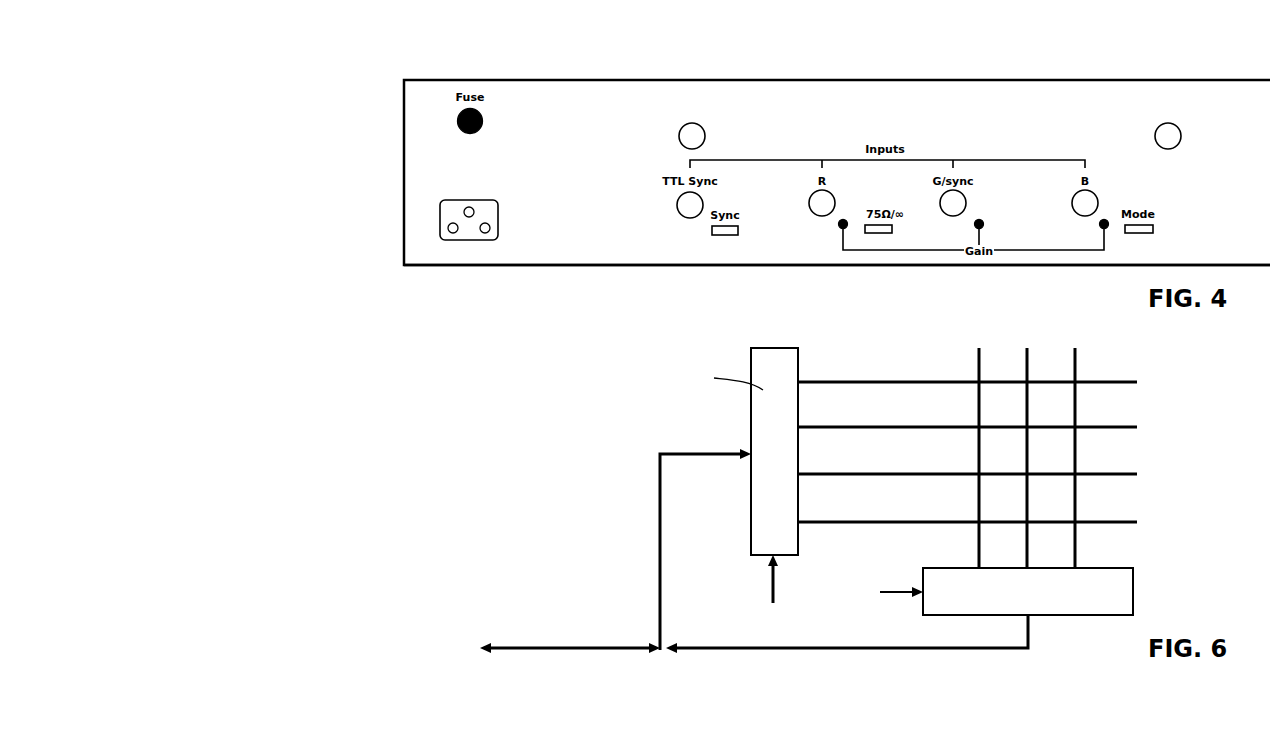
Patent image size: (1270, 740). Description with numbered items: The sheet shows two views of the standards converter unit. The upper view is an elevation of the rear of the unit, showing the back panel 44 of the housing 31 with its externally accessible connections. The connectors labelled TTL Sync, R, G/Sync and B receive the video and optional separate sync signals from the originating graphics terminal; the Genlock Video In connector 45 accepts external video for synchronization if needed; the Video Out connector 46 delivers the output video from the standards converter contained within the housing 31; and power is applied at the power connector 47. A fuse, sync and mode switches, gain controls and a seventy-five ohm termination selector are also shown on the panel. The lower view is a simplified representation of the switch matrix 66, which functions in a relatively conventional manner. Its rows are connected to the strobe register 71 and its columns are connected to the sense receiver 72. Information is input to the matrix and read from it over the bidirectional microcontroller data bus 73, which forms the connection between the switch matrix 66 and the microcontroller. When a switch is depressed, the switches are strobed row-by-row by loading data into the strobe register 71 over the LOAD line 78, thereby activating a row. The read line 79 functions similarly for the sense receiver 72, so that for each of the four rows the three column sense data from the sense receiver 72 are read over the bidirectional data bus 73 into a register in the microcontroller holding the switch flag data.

In FIG. 4, the housing 31 is at (838, 80).
In FIG. 4, the back panel 44 is at (608, 246).
In FIG. 4, the Genlock Video In connector 45 is at (679, 145).
In FIG. 4, the Video Out connector 46 is at (1172, 149).
In FIG. 4, the power connector 47 is at (498, 222).
In FIG. 6, the switch matrix 66 is at (1168, 462).
In FIG. 6, the strobe register 71 is at (798, 353).
In FIG. 6, the sense receiver 72 is at (1133, 595).
In FIG. 6, the bidirectional microcontroller data bus 73 is at (617, 645).
In FIG. 6, the LOAD line 78 is at (772, 593).
In FIG. 6, the read line 79 is at (898, 588).